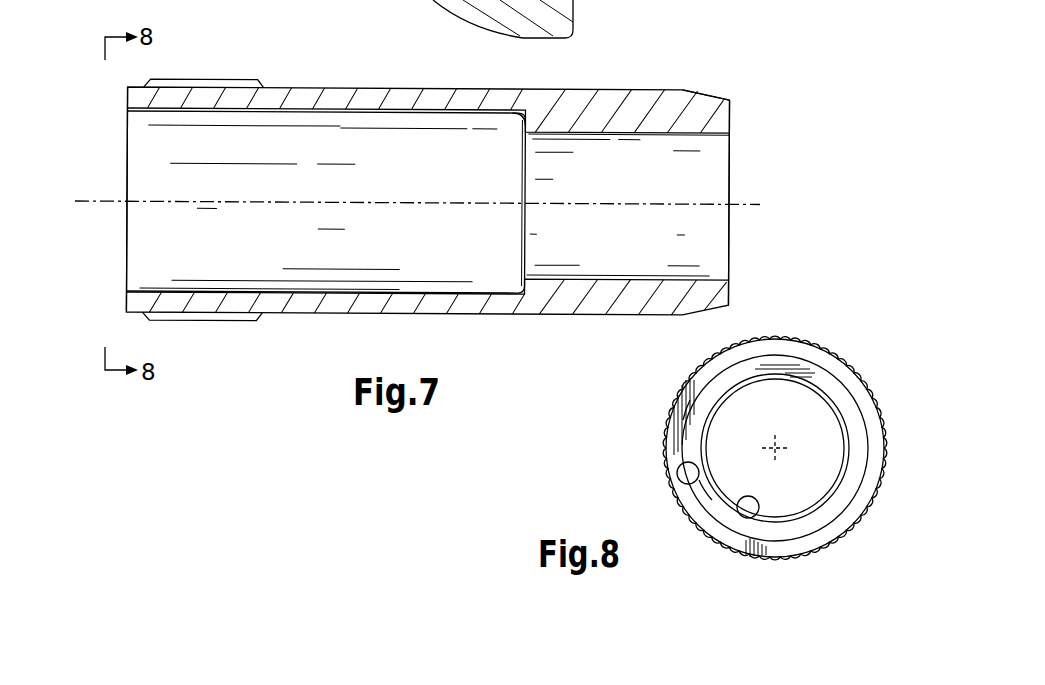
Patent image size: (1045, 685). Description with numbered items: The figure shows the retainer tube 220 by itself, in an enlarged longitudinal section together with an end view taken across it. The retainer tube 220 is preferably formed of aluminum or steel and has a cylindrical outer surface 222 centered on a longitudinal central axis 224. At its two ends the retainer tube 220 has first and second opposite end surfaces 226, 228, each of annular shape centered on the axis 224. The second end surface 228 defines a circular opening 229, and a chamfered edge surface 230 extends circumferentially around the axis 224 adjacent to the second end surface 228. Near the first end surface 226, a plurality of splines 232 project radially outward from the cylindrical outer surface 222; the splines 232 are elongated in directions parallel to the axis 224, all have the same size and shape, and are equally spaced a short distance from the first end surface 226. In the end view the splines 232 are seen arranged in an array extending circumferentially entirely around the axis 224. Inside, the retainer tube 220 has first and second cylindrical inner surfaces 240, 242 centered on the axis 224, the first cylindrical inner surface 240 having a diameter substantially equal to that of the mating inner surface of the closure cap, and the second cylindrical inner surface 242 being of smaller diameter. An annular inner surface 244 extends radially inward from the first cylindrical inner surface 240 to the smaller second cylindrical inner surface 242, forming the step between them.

In FIG. 7, the retainer tube 220 is at (88, 73).
In FIG. 8, the retainer tube 220 is at (618, 389).
In FIG. 7, the cylindrical outer surface 222 is at (430, 88).
In FIG. 8, the cylindrical outer surface 222 is at (686, 376).
In FIG. 7, the longitudinal central axis 224 is at (90, 199).
In FIG. 8, the longitudinal central axis 224 is at (768, 446).
In FIG. 7, the first end surface 226 is at (126, 96).
In FIG. 8, the first end surface 226 is at (678, 407).
In FIG. 7, the second end surface 228 is at (730, 115).
In FIG. 7, the circular opening 229 is at (738, 158).
In FIG. 7, the chamfered edge surface 230 is at (715, 95).
In FIG. 7, the splines 232 is at (217, 79).
In FIG. 8, the splines 232 is at (790, 333).
In FIG. 7, the first cylindrical inner surface 240 is at (323, 111).
In FIG. 8, the first cylindrical inner surface 240 is at (677, 462).
In FIG. 7, the second cylindrical inner surface 242 is at (642, 133).
In FIG. 8, the second cylindrical inner surface 242 is at (760, 510).
In FIG. 7, the annular inner surface 244 is at (518, 117).
In FIG. 8, the annular inner surface 244 is at (712, 500).